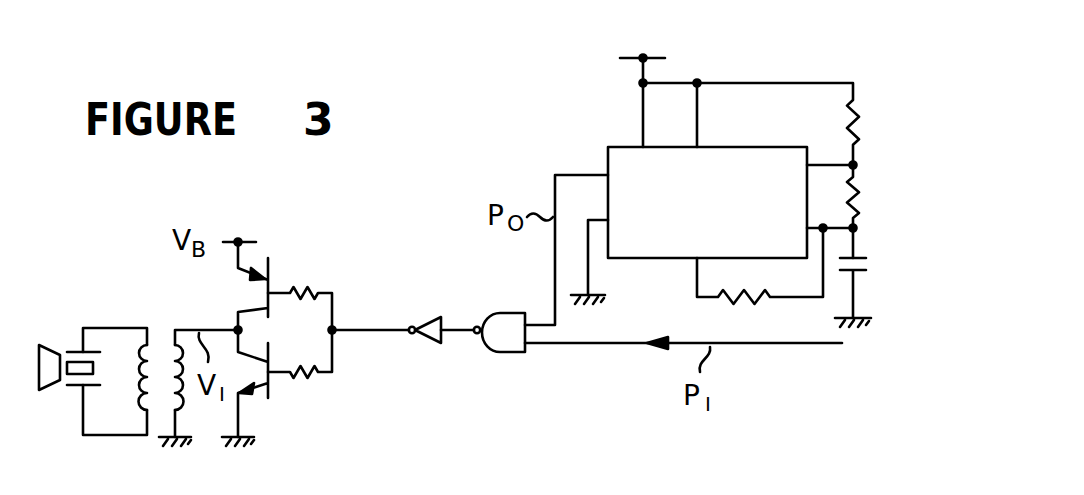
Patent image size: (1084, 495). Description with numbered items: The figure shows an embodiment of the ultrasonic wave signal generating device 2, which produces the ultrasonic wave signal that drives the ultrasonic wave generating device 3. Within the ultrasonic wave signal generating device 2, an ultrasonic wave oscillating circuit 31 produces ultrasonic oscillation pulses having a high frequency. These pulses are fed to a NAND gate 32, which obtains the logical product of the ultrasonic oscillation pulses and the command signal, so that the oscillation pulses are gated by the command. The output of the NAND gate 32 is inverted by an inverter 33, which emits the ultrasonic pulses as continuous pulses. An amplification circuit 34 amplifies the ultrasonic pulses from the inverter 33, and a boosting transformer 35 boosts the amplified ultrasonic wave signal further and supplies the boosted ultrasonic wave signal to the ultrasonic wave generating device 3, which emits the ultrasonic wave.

The ultrasonic wave signal generating device 2 is at (433, 251).
The ultrasonic wave generating device 3 is at (60, 392).
The ultrasonic wave oscillating circuit 31 is at (733, 145).
The NAND gate 32 is at (498, 352).
The inverter 33 is at (433, 345).
The amplification circuit 34 is at (312, 287).
The boosting transformer 35 is at (160, 335).